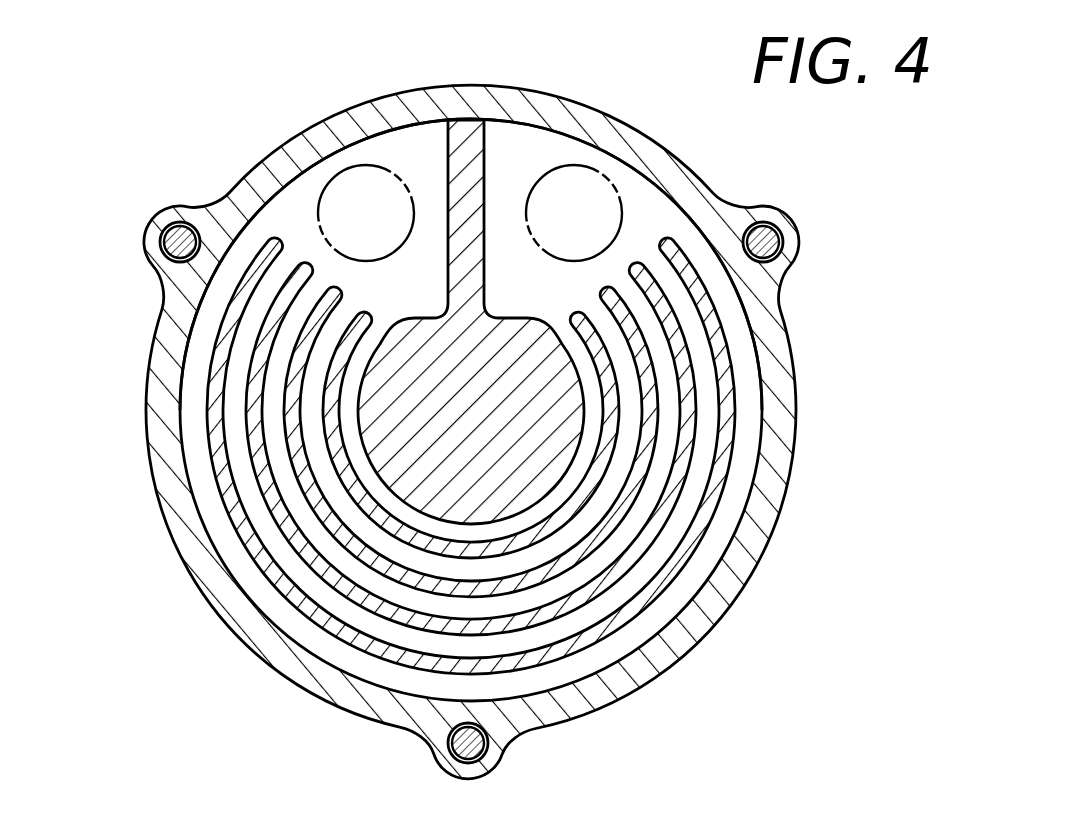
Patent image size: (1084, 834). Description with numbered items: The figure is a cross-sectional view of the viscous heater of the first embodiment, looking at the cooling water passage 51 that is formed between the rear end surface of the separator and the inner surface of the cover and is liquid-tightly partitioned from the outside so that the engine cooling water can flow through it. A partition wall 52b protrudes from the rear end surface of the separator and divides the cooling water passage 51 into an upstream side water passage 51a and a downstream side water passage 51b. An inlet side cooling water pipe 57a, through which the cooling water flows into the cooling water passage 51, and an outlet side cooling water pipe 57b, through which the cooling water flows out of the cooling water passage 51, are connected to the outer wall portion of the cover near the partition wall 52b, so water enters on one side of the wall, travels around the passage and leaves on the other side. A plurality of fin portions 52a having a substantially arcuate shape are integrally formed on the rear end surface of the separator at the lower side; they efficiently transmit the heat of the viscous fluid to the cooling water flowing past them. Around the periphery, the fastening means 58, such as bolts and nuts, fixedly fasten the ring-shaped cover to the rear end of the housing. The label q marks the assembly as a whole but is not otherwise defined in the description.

The cooling fan unit / assembly q is at (165, 80).
The cooling water passage 51 is at (738, 495).
The upstream side water passage 51a is at (412, 128).
The downstream side water passage 51b is at (530, 130).
The fin portions 52a is at (612, 625).
The partition wall 52b is at (475, 119).
The inlet side cooling water pipe 57a is at (336, 166).
The outlet side cooling water pipe 57b is at (600, 166).
The fastening means 58 is at (178, 245).